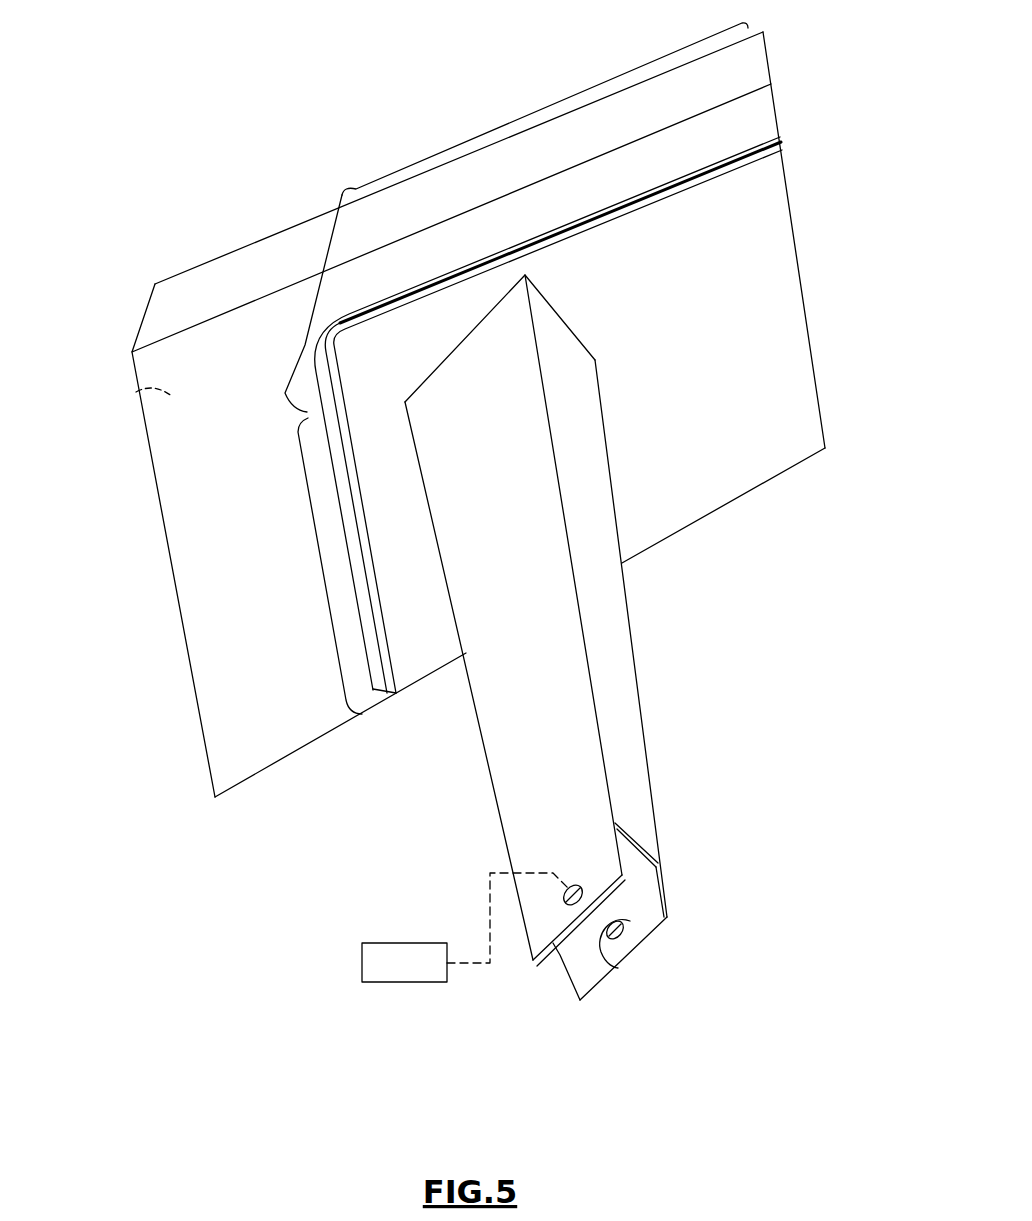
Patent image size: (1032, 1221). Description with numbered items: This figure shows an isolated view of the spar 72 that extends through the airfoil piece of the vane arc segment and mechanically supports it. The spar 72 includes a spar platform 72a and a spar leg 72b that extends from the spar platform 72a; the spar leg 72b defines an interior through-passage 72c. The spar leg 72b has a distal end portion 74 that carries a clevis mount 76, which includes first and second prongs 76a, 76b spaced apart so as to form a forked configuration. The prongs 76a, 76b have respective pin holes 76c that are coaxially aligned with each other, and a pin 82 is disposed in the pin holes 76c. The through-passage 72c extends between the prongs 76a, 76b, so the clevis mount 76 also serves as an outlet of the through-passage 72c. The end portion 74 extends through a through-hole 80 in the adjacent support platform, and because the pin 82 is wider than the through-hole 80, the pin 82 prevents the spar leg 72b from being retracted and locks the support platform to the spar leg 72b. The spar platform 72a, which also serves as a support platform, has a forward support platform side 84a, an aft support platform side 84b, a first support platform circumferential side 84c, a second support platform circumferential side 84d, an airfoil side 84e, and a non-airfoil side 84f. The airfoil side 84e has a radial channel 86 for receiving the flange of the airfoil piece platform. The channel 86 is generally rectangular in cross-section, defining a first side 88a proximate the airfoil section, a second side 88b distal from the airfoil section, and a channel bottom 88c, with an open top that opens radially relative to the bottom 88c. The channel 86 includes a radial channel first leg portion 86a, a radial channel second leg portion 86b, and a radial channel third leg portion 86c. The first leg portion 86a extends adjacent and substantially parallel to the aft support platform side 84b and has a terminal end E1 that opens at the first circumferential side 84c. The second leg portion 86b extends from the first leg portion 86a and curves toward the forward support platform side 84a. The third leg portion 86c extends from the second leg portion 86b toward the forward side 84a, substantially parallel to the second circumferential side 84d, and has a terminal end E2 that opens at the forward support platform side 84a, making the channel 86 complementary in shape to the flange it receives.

The spar 72 is at (313, 848).
The spar platform 72a is at (785, 242).
The spar leg 72b is at (640, 693).
The through-passage 72c is at (641, 874).
The distal end portion 74 is at (667, 813).
The clevis mount 76 is at (530, 960).
The first prong 76a is at (550, 917).
The second prong 76b is at (597, 990).
The pin holes 76c is at (568, 885).
The through-hole 80 is at (618, 968).
The pin 82 is at (396, 983).
The forward support platform side 84a is at (813, 348).
The aft support platform side 84b is at (200, 733).
The first support platform circumferential side 84c is at (727, 507).
The second support platform circumferential side 84d is at (405, 207).
The airfoil side 84e is at (224, 603).
The non-airfoil side 84f is at (137, 392).
The radial channel 86 is at (384, 603).
The radial channel first leg portion 86a is at (323, 570).
The radial channel second leg portion 86b is at (270, 330).
The radial channel third leg portion 86c is at (532, 108).
The first side 88a is at (532, 248).
The second side 88b is at (458, 270).
The channel bottom 88c is at (342, 450).
The terminal end E1 is at (395, 705).
The terminal end E2 is at (777, 143).